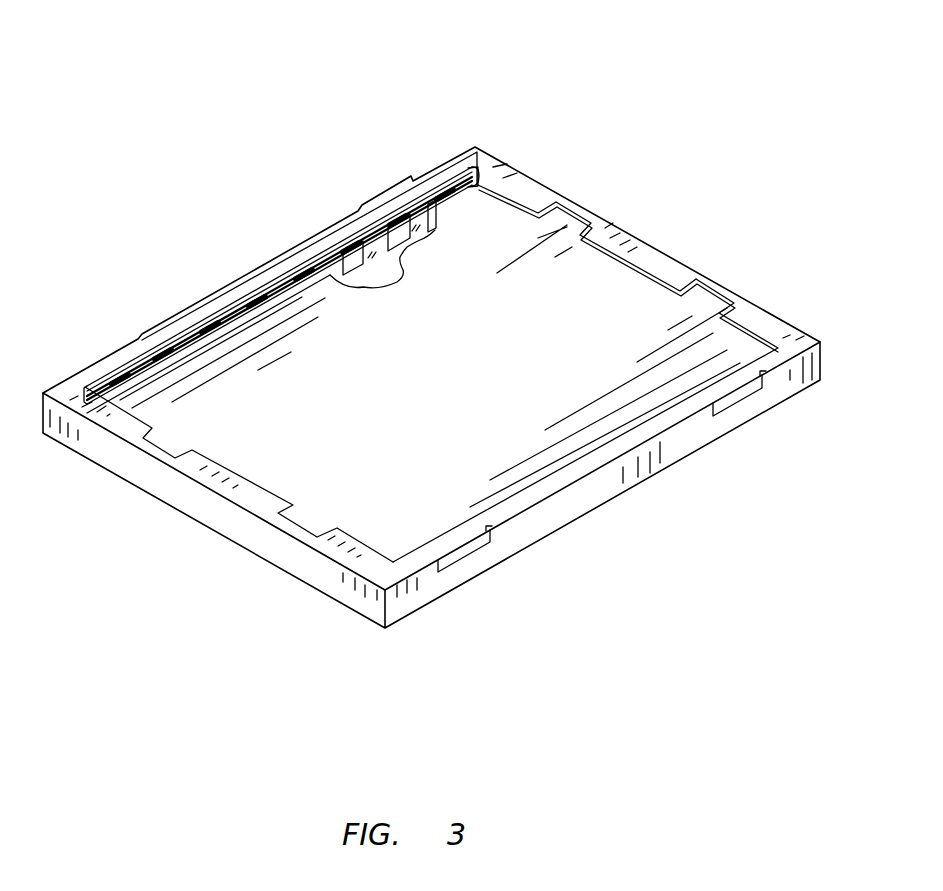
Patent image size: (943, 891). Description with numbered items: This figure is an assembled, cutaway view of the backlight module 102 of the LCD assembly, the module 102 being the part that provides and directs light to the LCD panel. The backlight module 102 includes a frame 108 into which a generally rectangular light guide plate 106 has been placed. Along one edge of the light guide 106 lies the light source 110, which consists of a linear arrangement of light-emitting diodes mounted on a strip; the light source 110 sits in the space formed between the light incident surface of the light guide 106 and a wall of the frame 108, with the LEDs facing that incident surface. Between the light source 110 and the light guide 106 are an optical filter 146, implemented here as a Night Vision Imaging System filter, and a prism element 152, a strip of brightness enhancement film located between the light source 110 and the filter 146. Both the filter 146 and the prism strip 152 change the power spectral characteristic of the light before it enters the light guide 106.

The backlight module 102 is at (265, 148).
The light guide plate 106 is at (478, 410).
The frame 108 is at (655, 238).
The light source 110 is at (437, 178).
The optical filter 146 is at (487, 183).
The prism element 152 is at (479, 158).